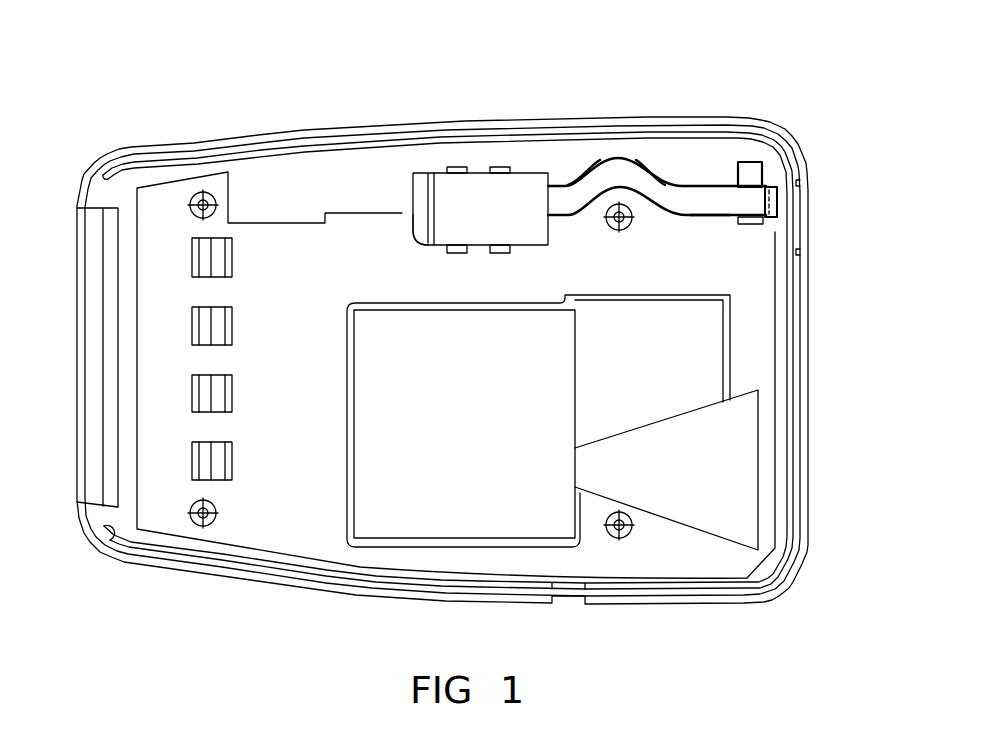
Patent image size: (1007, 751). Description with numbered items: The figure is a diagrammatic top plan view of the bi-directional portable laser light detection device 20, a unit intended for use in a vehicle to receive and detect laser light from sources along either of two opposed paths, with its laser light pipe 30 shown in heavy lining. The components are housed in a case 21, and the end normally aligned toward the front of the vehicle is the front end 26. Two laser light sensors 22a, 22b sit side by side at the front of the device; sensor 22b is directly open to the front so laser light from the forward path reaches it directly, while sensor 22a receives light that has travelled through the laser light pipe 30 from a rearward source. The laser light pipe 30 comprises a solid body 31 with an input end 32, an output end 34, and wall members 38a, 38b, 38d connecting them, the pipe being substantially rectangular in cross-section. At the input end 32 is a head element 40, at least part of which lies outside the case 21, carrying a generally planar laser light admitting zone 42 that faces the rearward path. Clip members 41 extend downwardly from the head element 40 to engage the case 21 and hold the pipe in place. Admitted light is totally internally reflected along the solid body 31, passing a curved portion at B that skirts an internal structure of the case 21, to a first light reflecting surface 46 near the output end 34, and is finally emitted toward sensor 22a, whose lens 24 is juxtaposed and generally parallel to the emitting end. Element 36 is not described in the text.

The bi-directional portable laser light detection device 20 is at (202, 70).
The case 21 is at (345, 127).
The laser light sensor 22a is at (755, 223).
The laser light sensor 22b is at (738, 173).
The lens 24 is at (766, 170).
The front end 26 is at (807, 430).
The laser light pipe 30 is at (561, 158).
The solid body 31 is at (582, 213).
The input end 32 is at (407, 228).
The output end 34 is at (779, 204).
The tab 36 is at (707, 185).
The wall member 38a is at (593, 167).
The wall member 38b is at (646, 170).
The wall member 38d is at (707, 216).
The head element 40 is at (538, 246).
The clip members 41 is at (503, 167).
The laser light admitting zone 42 is at (431, 203).
The first light reflecting surface 46 is at (797, 184).
The curved portion B is at (607, 173).